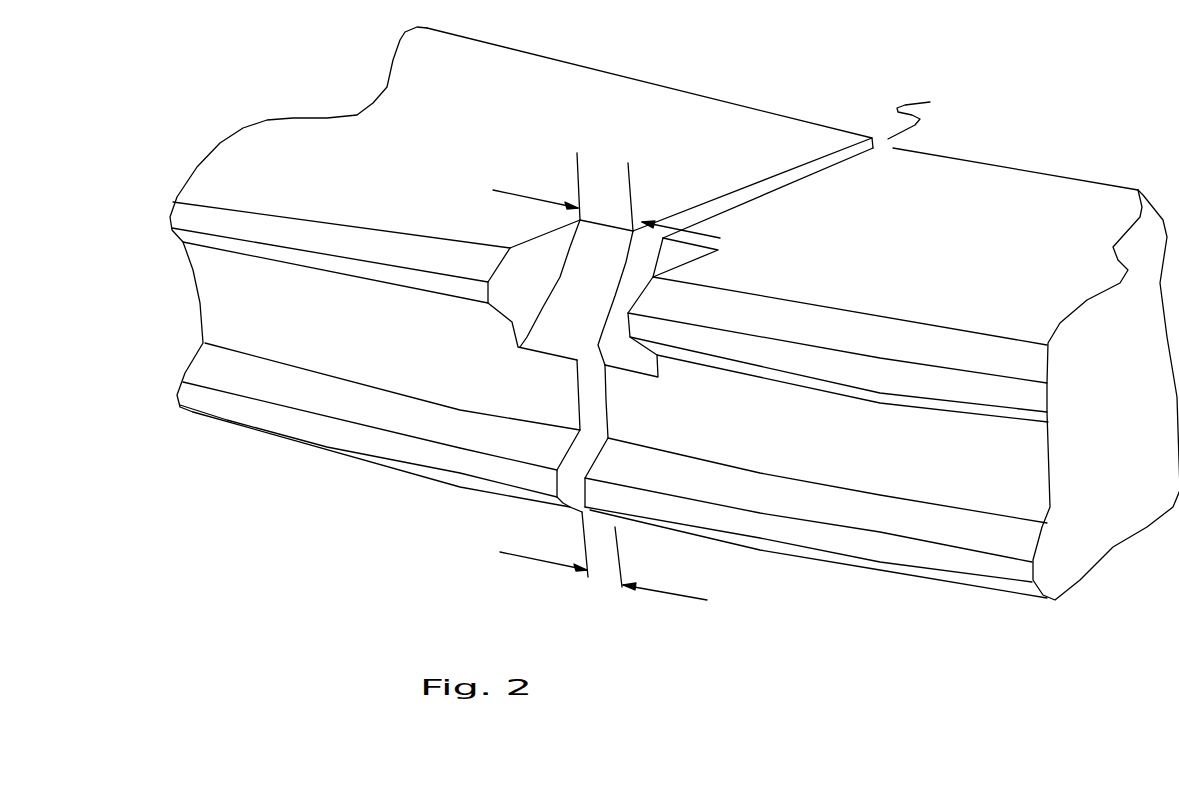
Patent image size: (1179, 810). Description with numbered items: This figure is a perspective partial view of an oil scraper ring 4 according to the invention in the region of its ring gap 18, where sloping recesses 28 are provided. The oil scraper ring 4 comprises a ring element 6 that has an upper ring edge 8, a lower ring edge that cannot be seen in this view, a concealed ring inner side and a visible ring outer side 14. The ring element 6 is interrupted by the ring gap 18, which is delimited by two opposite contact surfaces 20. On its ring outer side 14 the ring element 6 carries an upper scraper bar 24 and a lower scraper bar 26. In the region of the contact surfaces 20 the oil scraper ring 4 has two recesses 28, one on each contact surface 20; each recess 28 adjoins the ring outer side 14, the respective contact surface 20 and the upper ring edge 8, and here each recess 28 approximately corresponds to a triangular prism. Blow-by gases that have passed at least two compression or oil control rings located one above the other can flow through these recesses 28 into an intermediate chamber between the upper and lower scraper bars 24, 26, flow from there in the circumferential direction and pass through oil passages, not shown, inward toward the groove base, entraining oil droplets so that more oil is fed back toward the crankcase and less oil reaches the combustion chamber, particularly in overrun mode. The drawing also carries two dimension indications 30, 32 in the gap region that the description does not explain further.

The oil scraper ring 4 is at (340, 300).
The ring element 6 is at (916, 395).
The upper ring edge 8 is at (782, 147).
The ring outer side 14 is at (626, 422).
The ring gap 18 is at (932, 106).
The contact surfaces 20 is at (584, 436).
The upper scraper bar 24 is at (610, 325).
The lower scraper bar 26 is at (613, 490).
The recesses 28 is at (603, 298).
The weld zone width 30 is at (603, 559).
The weld collar width 32 is at (606, 195).